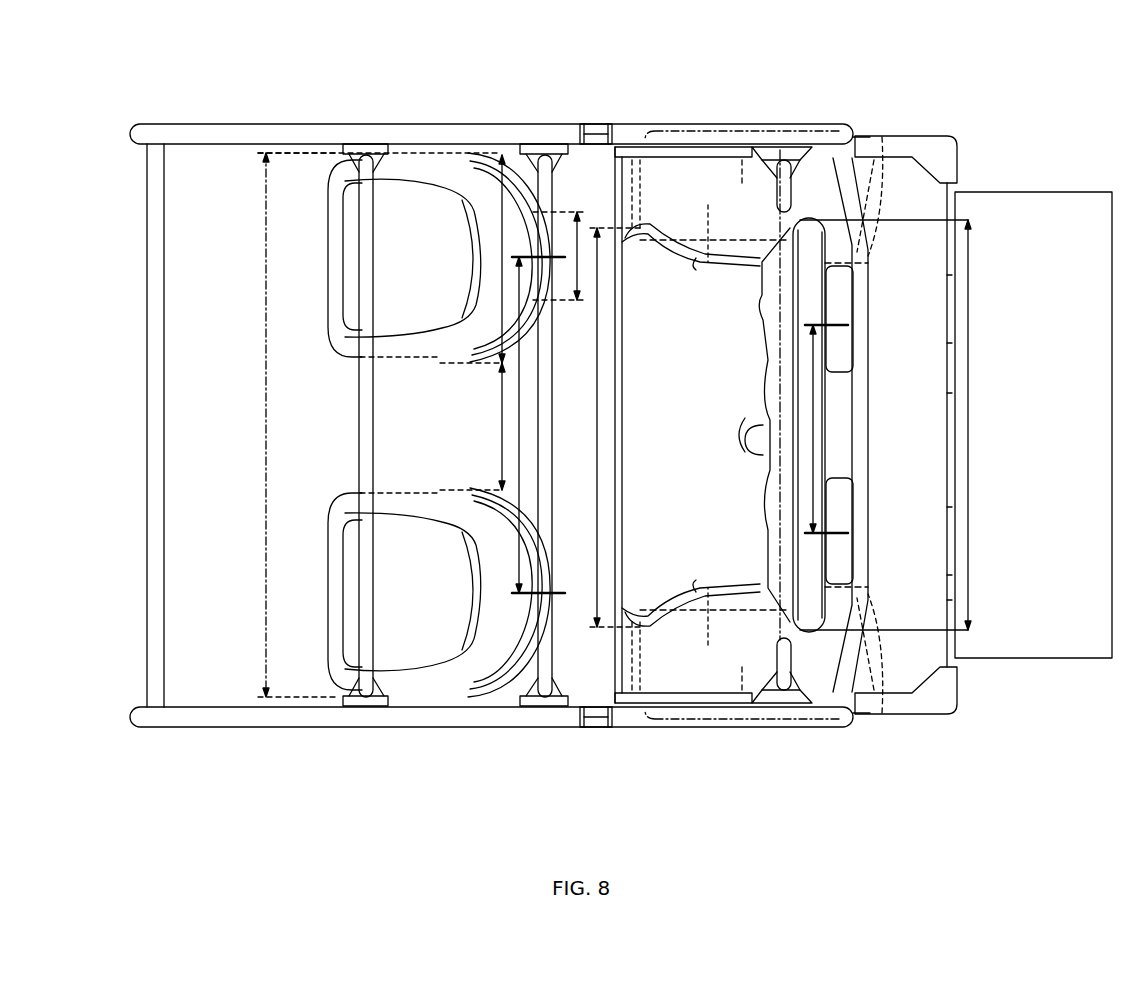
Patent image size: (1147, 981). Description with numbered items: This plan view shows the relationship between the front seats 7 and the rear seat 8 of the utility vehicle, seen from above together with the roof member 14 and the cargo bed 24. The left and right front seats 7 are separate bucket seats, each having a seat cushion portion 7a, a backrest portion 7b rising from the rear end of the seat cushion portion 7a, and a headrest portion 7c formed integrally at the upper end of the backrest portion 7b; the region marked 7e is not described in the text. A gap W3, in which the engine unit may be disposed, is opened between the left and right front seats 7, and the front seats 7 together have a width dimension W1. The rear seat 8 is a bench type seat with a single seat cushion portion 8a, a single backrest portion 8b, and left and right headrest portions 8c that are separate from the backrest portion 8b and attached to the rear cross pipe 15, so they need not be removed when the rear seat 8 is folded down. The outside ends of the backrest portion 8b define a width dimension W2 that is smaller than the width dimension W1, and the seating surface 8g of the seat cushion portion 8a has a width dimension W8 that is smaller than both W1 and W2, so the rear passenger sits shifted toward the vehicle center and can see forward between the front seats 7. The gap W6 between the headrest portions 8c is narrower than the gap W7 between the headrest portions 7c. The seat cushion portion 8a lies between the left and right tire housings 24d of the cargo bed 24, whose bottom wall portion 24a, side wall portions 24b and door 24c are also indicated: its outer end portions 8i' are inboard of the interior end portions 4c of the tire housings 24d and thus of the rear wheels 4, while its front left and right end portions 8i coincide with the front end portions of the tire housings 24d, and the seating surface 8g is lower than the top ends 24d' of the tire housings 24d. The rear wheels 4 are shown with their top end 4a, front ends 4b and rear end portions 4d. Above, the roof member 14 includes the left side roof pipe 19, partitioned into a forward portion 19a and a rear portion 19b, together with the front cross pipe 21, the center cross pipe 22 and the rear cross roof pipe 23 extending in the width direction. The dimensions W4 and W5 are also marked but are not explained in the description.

The rear wheels 4 is at (717, 150).
The top end of rear wheel 4a is at (749, 147).
The front ends of rear wheels 4b is at (655, 148).
The interior end portions of tire housings 4c is at (722, 270).
The rear end portions of rear wheels 4d is at (885, 178).
The front seat 7 is at (326, 238).
The seat cushion portion 7a is at (405, 323).
The backrest portion 7b is at (486, 262).
The headrest portion 7c is at (540, 303).
The seat center 7e is at (398, 232).
The rear seat 8 is at (612, 475).
The seat cushion portion 8a is at (616, 550).
The backrest portion 8b is at (758, 470).
The headrest portions 8c is at (853, 317).
The seating surface 8g is at (660, 516).
The left and right end portions 8i is at (691, 427).
The outer end portions 8i' is at (707, 426).
The roof member 14 is at (515, 734).
The rear cross pipe 15 is at (257, 113).
The left side roof pipe 19 is at (629, 115).
The forward portion 19a is at (459, 125).
The rear portion 19b is at (691, 131).
The front cross pipe 21 is at (357, 426).
The center cross pipe 22 is at (553, 401).
The rear cross roof pipe 23 is at (776, 396).
The cargo bed 24 is at (992, 176).
The bottom wall portion 24a is at (948, 563).
The side wall portions 24b is at (903, 130).
The door 24c is at (1052, 190).
The tire housings 24d is at (894, 425).
The top ends of tire housings 24d' is at (753, 430).
The width dimension of front seats W1 is at (264, 406).
The width dimension of rear backrest W2 is at (970, 420).
The gap between front seats W3 is at (500, 418).
The width W4 is at (579, 212).
The width W5 is at (505, 153).
The gap between rear headrests W6 is at (846, 400).
The gap between front headrests W7 is at (600, 433).
The width dimension of seating surface W8 is at (623, 410).